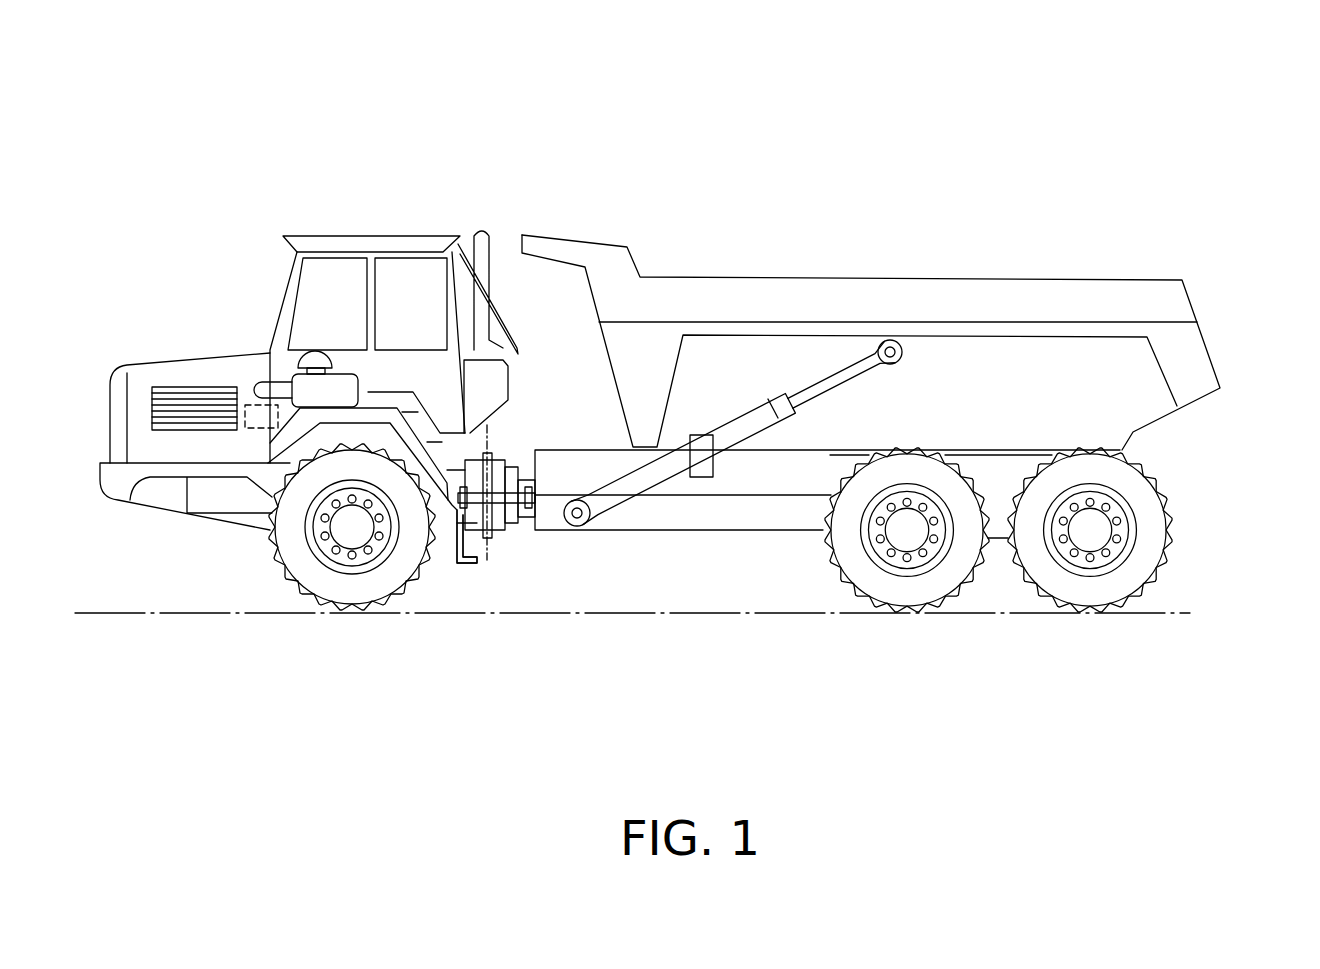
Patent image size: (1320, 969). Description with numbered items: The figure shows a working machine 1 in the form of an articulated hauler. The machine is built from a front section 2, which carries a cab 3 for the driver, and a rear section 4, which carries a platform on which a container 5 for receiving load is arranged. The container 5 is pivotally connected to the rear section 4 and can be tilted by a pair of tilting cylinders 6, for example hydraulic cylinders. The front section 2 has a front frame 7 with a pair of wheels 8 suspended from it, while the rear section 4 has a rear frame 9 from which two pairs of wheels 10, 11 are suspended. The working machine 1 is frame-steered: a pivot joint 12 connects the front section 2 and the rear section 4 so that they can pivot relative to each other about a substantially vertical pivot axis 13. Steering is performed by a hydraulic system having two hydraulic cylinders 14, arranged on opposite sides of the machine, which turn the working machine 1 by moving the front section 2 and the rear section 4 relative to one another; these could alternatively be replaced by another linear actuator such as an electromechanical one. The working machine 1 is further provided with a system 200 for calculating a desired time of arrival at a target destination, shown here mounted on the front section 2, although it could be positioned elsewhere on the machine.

The working machine 1 is at (838, 122).
The front section 2 is at (309, 417).
The cab 3 is at (392, 250).
The rear section 4 is at (895, 435).
The container 5 is at (822, 297).
The tilting cylinders 6 is at (653, 515).
The front frame 7 is at (218, 497).
The wheels 8 is at (297, 558).
The rear frame 9 is at (650, 473).
The wheels 10 is at (960, 562).
The wheels 11 is at (1147, 563).
The pivot joint 12 is at (496, 512).
The pivot axis 13 is at (490, 565).
The hydraulic cylinders 14 is at (551, 571).
The system 200 is at (250, 405).